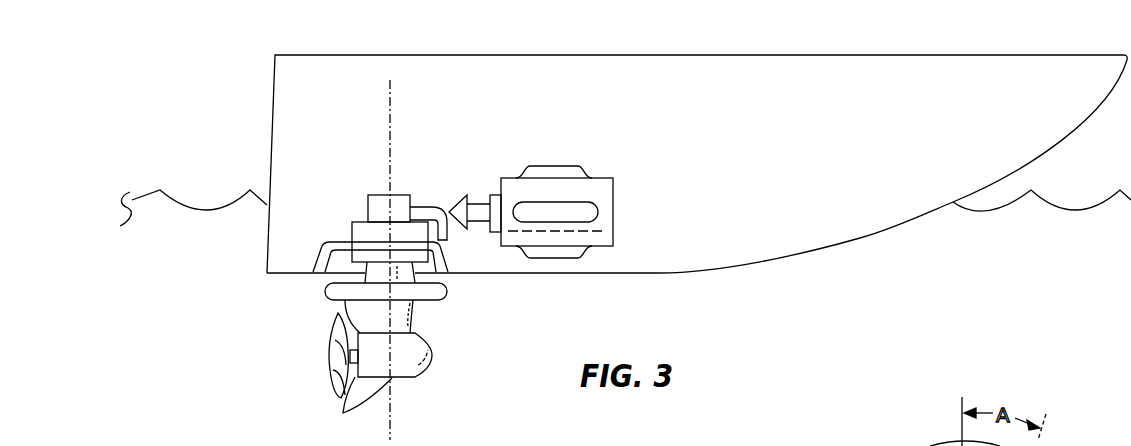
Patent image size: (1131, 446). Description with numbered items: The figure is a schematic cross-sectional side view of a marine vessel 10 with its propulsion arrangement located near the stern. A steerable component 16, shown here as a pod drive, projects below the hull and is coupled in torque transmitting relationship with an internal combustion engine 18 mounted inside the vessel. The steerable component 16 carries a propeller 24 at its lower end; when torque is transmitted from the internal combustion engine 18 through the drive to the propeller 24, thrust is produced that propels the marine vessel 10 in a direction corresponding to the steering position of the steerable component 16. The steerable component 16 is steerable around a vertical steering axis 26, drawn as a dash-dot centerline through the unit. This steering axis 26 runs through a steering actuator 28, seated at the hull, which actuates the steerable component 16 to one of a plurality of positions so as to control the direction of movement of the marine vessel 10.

The marine vessel 10 is at (567, 55).
The steerable component 16 is at (446, 308).
The internal combustion engine 18 is at (603, 177).
The propeller 24 is at (332, 360).
The steering axis 26 is at (390, 149).
The steering actuator 28 is at (350, 220).